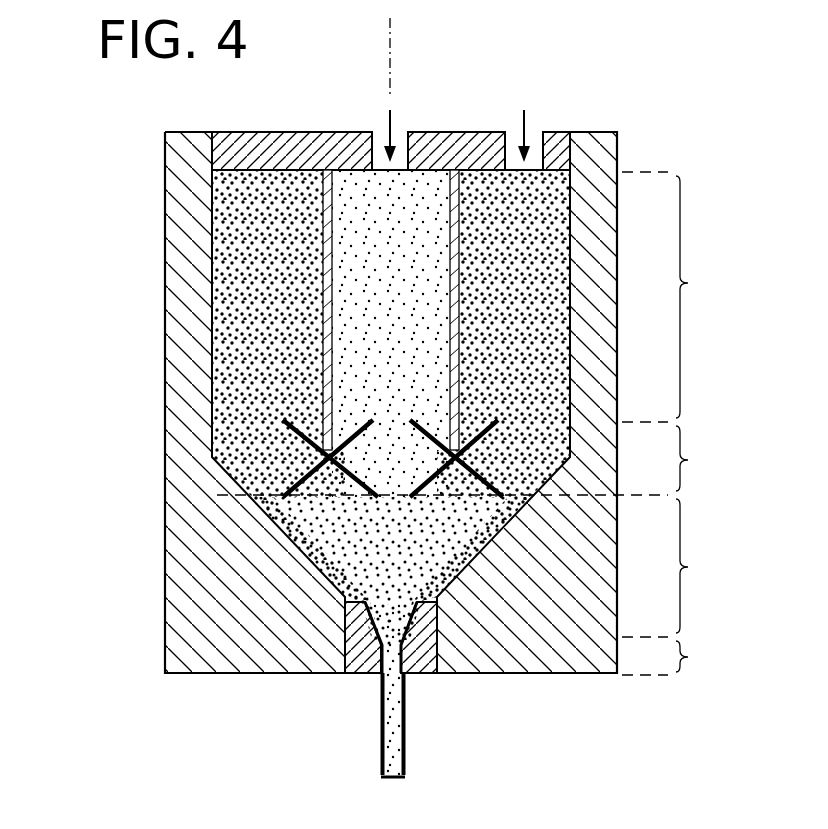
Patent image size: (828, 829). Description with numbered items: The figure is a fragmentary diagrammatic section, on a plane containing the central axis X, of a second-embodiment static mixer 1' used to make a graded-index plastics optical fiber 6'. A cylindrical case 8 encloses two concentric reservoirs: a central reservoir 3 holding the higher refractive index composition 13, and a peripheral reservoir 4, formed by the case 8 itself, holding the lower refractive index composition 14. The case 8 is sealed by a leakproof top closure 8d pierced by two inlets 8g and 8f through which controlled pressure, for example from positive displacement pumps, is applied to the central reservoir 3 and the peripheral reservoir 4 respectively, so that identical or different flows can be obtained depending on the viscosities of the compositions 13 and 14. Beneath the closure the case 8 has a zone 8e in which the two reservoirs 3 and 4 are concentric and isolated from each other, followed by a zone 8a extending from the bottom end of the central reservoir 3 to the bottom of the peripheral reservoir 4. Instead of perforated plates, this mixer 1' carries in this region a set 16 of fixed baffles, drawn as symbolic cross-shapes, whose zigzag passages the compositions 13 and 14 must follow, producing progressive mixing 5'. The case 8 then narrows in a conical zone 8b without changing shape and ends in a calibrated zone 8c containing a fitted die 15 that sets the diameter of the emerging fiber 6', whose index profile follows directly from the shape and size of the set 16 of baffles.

The static mixer 1' is at (459, 377).
The central reservoir 3 is at (326, 213).
The peripheral reservoir 4 is at (190, 221).
The progressive mixing 5' is at (317, 571).
The graded-index plastics optical fiber 6' is at (425, 690).
The cylindrical case 8 is at (156, 362).
The mixing zone 8a is at (675, 456).
The conical zone 8b is at (473, 564).
The calibrated zone 8c is at (675, 656).
The leakproof top closure 8d is at (470, 148).
The isolation zone 8e is at (676, 295).
The inlet 8f is at (537, 150).
The inlet 8g is at (399, 152).
The higher refractive index composition 13 is at (366, 207).
The lower refractive index composition 14 is at (240, 282).
The die 15 is at (418, 664).
The set of fixed baffles 16 is at (413, 423).
The central axis X is at (389, 48).